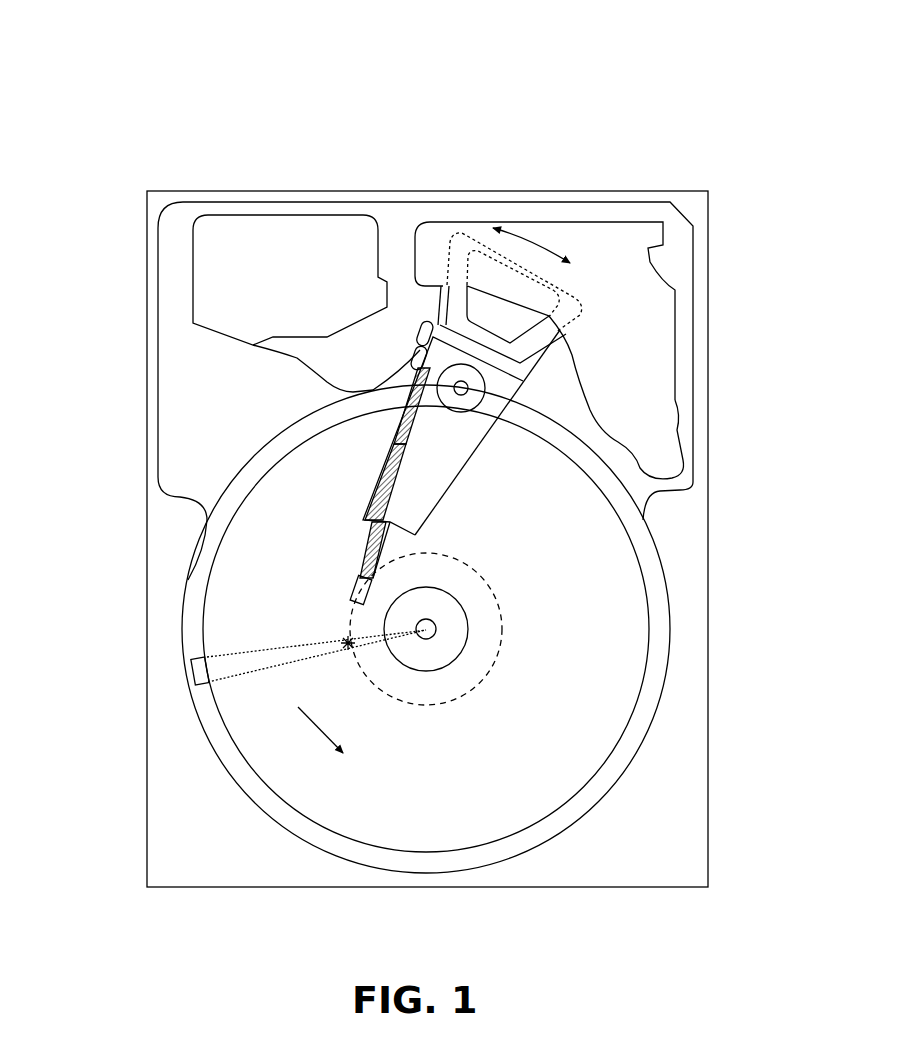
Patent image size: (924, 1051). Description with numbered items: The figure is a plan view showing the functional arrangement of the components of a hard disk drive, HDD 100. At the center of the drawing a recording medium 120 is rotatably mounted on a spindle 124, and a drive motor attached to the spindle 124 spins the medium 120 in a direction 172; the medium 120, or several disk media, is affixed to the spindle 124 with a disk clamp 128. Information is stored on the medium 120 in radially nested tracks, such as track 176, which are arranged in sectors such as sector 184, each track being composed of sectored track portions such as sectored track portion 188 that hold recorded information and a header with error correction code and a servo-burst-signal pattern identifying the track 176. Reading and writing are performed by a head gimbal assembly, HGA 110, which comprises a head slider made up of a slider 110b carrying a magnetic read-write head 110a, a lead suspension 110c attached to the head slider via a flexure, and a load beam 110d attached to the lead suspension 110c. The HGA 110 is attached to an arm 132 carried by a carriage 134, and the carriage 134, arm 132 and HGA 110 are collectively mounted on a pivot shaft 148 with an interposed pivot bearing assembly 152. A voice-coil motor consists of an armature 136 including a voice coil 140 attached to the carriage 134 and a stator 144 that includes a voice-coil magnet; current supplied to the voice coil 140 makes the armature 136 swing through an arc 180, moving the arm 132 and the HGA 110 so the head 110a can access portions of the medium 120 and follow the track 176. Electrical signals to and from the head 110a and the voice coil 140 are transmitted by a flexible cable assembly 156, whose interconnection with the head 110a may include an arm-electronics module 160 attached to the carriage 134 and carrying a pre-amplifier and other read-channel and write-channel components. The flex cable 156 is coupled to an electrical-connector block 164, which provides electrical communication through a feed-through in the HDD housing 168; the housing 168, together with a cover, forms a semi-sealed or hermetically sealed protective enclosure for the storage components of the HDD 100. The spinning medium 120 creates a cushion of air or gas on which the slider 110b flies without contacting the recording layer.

The hard disk drive 100 is at (83, 83).
The head gimbal assembly 110 is at (80, 460).
The magnetic read-write head 110a is at (350, 585).
The slider 110b is at (360, 573).
The lead suspension 110c is at (360, 540).
The load beam 110d is at (360, 507).
The recording medium 120 is at (587, 587).
The spindle 124 is at (437, 626).
The disk clamp 128 is at (448, 643).
The arm 132 is at (437, 490).
The carriage 134 is at (480, 418).
The armature 136 is at (438, 298).
The voice coil 140 is at (455, 285).
The stator 144 is at (648, 302).
The pivot shaft 148 is at (468, 388).
The pivot bearing assembly 152 is at (480, 400).
The flexible cable assembly 156 is at (320, 368).
The arm-electronics module 160 is at (417, 355).
The electrical-connector block 164 is at (215, 280).
The HDD housing 168 is at (690, 203).
The direction 172 is at (325, 735).
The track 176 is at (492, 592).
The arc 180 is at (532, 245).
The sector 184 is at (193, 672).
The sectored track portion 188 is at (348, 643).